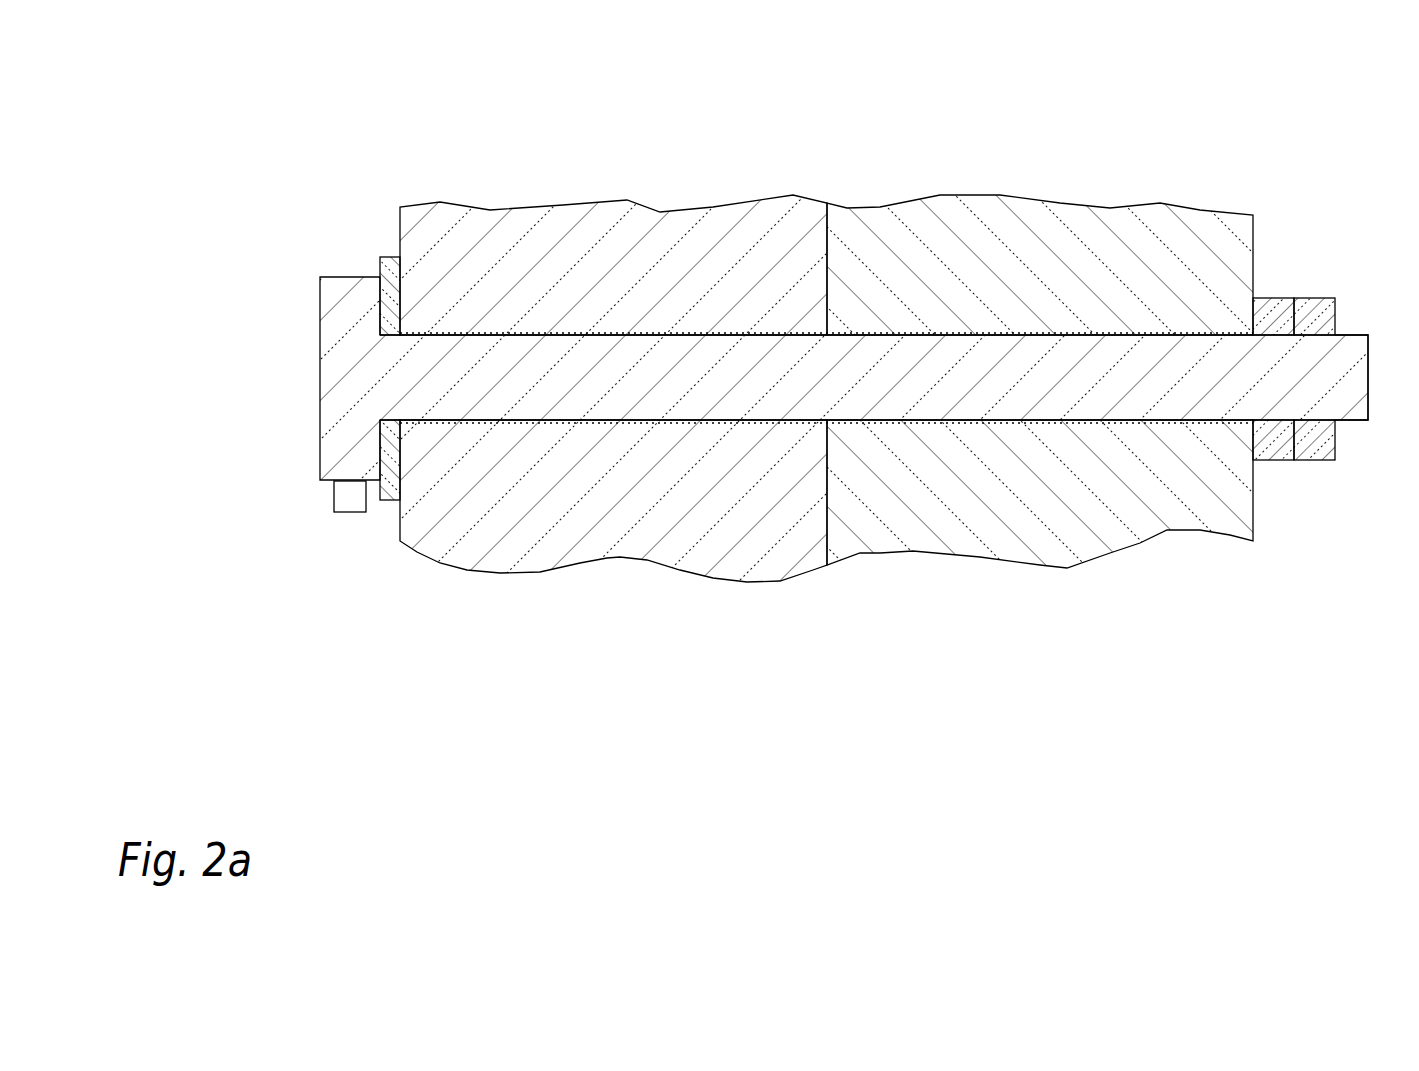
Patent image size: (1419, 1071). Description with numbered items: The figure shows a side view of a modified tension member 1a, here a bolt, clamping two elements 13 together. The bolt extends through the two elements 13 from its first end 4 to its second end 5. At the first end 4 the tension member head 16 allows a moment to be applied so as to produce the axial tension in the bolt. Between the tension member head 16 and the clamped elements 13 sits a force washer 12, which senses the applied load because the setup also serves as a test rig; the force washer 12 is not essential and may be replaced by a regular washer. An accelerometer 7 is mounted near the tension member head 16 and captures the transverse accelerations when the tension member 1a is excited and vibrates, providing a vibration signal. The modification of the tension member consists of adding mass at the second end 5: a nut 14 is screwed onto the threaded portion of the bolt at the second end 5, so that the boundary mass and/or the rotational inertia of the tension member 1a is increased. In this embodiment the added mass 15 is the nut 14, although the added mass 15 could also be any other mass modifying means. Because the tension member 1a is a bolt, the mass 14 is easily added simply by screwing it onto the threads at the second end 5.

The modified tension member 1a is at (638, 417).
The first end 4 is at (299, 324).
The tension member head 16 is at (338, 317).
The second end 5 is at (1317, 377).
The accelerometer 7 is at (347, 492).
The force washer 12 is at (388, 267).
The clamped elements 13 is at (893, 227).
The nut 14 is at (1268, 310).
The added mass 15 is at (1313, 312).